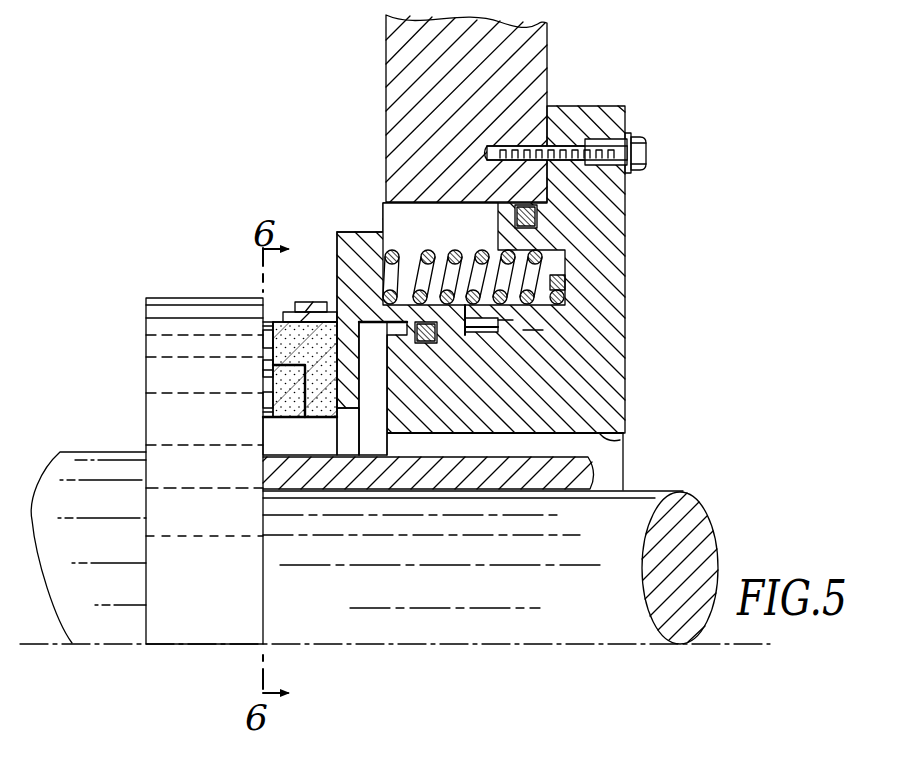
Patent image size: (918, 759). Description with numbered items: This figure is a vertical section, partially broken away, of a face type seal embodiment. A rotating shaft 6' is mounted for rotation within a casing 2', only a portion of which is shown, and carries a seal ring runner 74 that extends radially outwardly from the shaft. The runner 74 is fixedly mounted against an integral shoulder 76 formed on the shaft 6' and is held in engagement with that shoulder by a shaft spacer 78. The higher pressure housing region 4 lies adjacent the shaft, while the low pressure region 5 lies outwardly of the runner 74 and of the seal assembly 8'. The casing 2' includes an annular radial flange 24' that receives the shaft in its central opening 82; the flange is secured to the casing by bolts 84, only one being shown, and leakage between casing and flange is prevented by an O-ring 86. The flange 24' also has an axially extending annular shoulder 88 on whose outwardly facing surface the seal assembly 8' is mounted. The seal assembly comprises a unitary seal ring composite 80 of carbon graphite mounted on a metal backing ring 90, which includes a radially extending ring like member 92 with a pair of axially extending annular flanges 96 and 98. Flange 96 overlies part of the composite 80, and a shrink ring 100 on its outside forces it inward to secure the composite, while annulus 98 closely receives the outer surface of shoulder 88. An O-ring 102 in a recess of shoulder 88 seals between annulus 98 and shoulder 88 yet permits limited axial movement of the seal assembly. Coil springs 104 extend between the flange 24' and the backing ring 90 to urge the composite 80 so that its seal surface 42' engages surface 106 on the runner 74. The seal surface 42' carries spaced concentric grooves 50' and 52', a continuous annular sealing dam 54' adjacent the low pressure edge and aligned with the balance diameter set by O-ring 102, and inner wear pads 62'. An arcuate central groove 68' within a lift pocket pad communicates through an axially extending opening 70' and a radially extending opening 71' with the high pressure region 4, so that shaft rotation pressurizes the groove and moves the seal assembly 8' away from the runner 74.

The casing 2' is at (491, 108).
The higher pressure housing region 4 is at (580, 447).
The low pressure region 5 is at (196, 200).
The rotating shaft 6' is at (490, 593).
The face type seal assembly 8' is at (356, 289).
The radial flange 24' is at (515, 269).
The seal surface 42' is at (240, 431).
The concentric groove 50' is at (230, 408).
The concentric groove 52' is at (230, 330).
The continuous annular sealing dam 54' is at (225, 290).
The inner wear pads 62' is at (300, 409).
The arcuate central groove 68' is at (234, 359).
The axially extending opening 70' is at (242, 385).
The radially extending opening 71' is at (311, 431).
The seal ring runner 74 is at (156, 298).
The integral shoulder 76 is at (146, 614).
The shaft spacer 78 is at (578, 473).
The seal ring composite 80 is at (305, 335).
The central opening 82 is at (625, 435).
The bolts 84 is at (643, 173).
The O-ring 86 is at (540, 220).
The axially extending annular shoulder 88 is at (402, 437).
The metal backing ring 90 is at (375, 310).
The ring like member 92 is at (352, 372).
The annular axially extending flange 96 is at (279, 318).
The annular axially extending flange 98 is at (406, 298).
The shrink ring 100 is at (317, 302).
The O-ring 102 is at (426, 345).
The coil springs 104 is at (482, 256).
The surface 106 is at (272, 308).